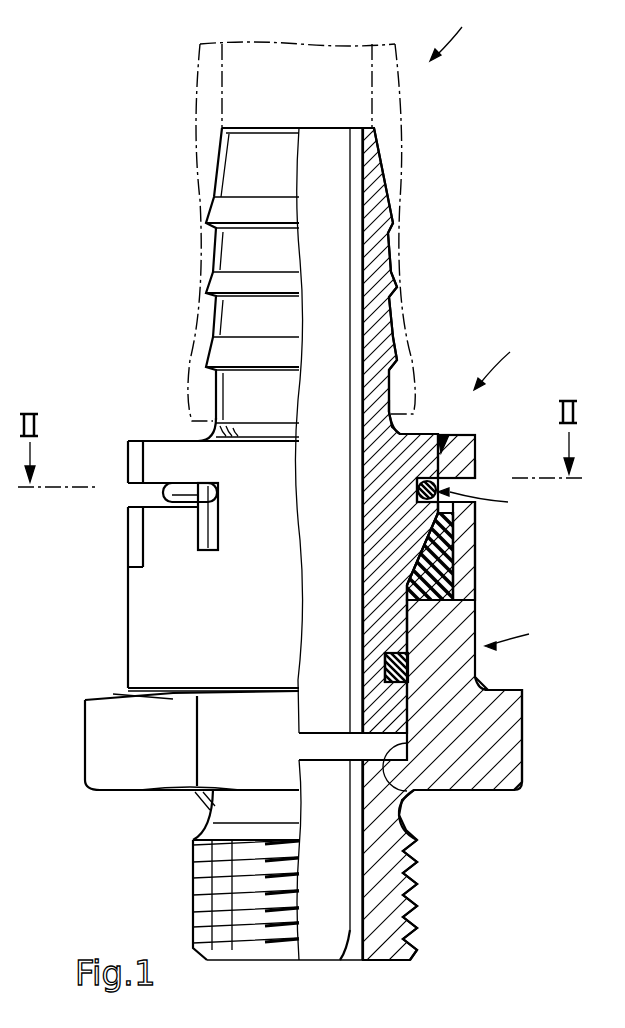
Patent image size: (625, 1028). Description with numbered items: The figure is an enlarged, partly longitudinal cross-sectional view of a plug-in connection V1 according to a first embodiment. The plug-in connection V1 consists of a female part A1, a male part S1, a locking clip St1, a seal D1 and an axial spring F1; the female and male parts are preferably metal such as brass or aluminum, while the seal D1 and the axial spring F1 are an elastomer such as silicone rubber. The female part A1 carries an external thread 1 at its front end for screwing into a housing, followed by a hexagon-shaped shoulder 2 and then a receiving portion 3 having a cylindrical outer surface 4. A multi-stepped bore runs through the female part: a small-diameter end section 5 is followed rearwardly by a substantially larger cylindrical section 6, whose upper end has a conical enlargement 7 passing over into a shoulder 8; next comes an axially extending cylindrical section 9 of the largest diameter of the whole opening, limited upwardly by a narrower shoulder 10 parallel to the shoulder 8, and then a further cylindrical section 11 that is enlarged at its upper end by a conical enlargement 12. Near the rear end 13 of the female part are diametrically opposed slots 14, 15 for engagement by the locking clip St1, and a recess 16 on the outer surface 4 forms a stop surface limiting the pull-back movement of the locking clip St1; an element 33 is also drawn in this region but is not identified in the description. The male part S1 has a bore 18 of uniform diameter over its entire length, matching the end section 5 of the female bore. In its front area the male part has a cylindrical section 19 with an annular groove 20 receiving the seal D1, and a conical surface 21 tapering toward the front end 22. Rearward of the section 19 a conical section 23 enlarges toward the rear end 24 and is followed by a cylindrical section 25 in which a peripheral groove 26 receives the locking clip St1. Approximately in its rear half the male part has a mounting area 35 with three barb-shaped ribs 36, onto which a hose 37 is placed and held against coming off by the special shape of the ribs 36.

The external thread 1 is at (410, 903).
The hexagon-shaped shoulder 2 is at (520, 770).
The receiving portion 3 is at (460, 624).
The cylindrical outer surface 4 is at (128, 605).
The end section 5 is at (352, 935).
The cylindrical section 6 is at (406, 803).
The conical enlargement 7 is at (372, 600).
The shoulder 8 is at (440, 580).
The cylindrical section 9 is at (430, 537).
The shoulder 10 is at (410, 513).
The cylindrical section 11 is at (442, 441).
The conical enlargement 12 is at (476, 439).
The rear end 13 is at (152, 440).
The slot 14 is at (137, 495).
The slot 15 is at (450, 484).
The recess 16 is at (137, 447).
The bore 18 is at (363, 148).
The cylindrical section 19 is at (373, 634).
The annular groove 20 is at (385, 667).
The conical surface 21 is at (410, 753).
The front end 22 is at (332, 742).
The conical section 23 is at (453, 543).
The rear end 24 is at (262, 62).
The cylindrical section 25 is at (476, 467).
The peripheral groove 26 is at (411, 479).
The locking key 33 is at (203, 522).
The mounting area 35 is at (391, 200).
The ribs 36 is at (212, 217).
The hose 37 is at (382, 52).
The plug-in connection V1 is at (458, 30).
The male part S1 is at (505, 355).
The locking clip St1 is at (492, 506).
The axial spring F1 is at (477, 587).
The female part A1 is at (522, 638).
The seal D1 is at (408, 668).